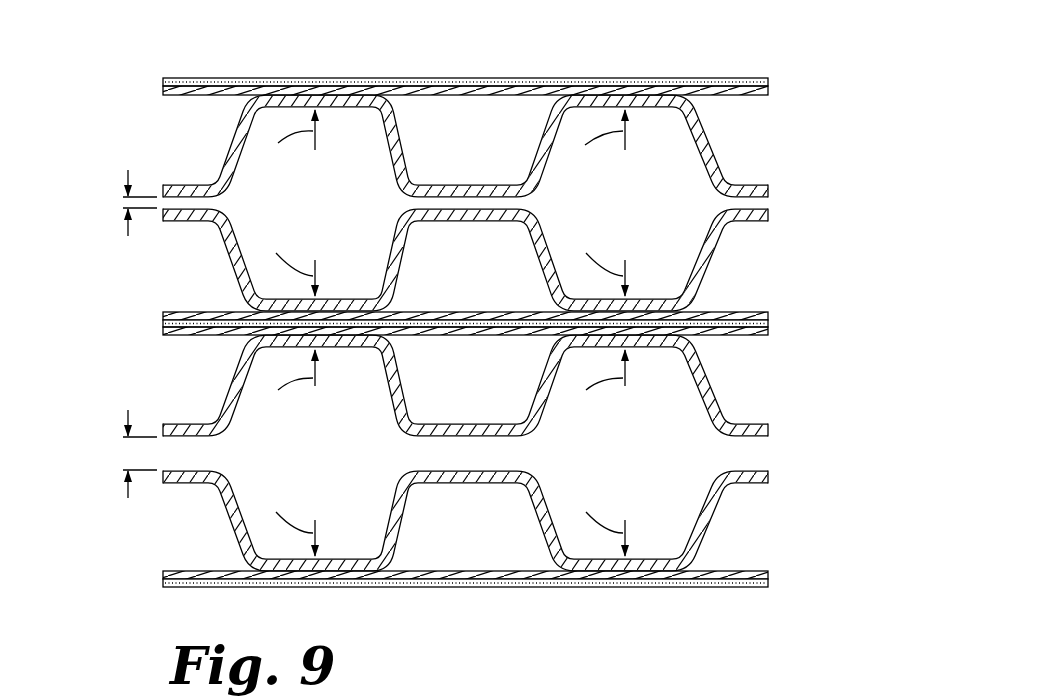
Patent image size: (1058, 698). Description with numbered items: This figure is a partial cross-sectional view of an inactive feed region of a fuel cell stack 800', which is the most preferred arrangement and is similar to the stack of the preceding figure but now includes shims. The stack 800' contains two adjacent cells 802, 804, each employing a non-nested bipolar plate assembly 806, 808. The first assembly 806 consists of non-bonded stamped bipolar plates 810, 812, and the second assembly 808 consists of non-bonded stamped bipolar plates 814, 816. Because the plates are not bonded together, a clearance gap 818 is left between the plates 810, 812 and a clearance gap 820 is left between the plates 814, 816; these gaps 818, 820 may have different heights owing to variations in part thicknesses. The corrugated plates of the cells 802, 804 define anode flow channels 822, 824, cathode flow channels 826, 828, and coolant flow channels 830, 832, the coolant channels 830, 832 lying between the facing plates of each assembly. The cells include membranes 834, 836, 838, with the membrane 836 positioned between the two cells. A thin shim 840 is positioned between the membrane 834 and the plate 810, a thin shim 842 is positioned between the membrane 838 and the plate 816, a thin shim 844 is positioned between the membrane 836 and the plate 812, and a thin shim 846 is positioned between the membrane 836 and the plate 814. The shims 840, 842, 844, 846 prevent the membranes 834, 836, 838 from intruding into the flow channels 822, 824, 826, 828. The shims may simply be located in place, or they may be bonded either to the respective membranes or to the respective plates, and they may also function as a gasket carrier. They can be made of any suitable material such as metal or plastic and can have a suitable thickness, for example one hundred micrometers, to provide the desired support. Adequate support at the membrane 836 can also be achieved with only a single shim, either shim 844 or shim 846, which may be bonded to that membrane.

The fuel cell stack 800' is at (462, 323).
The cell 802 is at (741, 151).
The cell 804 is at (731, 394).
The non-nested bipolar plate assembly 806 is at (772, 193).
The non-nested bipolar plate assembly 808 is at (772, 433).
The bipolar plate 810 is at (233, 140).
The bipolar plate 812 is at (228, 254).
The bipolar plate 814 is at (232, 391).
The bipolar plate 816 is at (230, 518).
The clearance gap 818 is at (123, 197).
The clearance gap 820 is at (127, 452).
The anode flow channel 822 is at (485, 150).
The anode flow channel 824 is at (485, 382).
The cathode flow channel 826 is at (485, 280).
The cathode flow channel 828 is at (485, 532).
The coolant flow channel 830 is at (335, 214).
The coolant flow channel 832 is at (335, 452).
The membrane 834 is at (745, 79).
The membrane 836 is at (768, 323).
The membrane 838 is at (730, 587).
The thin shim 840 is at (736, 96).
The thin shim 842 is at (728, 572).
The thin shim 844 is at (724, 313).
The thin shim 846 is at (752, 335).